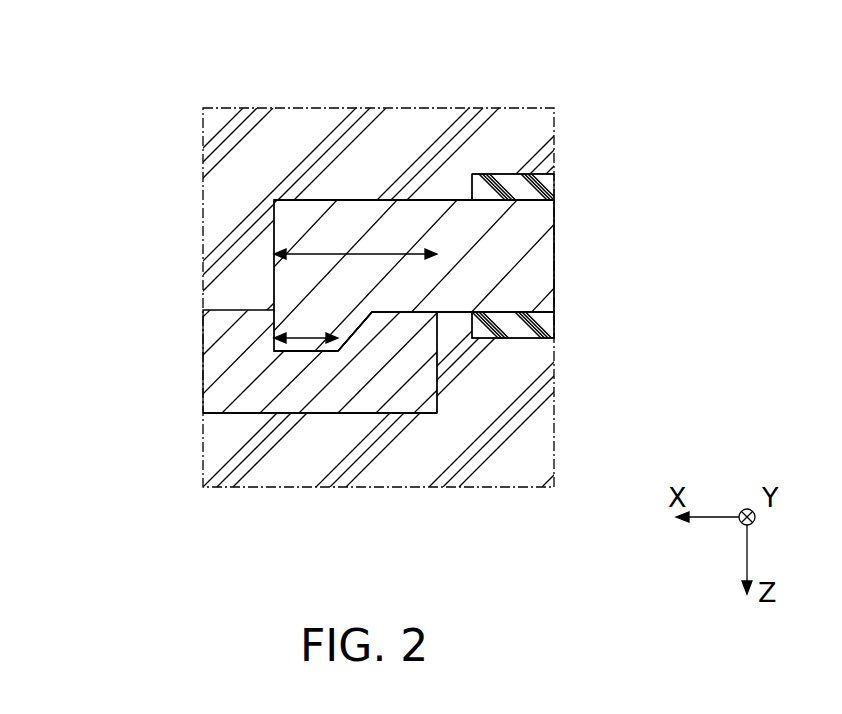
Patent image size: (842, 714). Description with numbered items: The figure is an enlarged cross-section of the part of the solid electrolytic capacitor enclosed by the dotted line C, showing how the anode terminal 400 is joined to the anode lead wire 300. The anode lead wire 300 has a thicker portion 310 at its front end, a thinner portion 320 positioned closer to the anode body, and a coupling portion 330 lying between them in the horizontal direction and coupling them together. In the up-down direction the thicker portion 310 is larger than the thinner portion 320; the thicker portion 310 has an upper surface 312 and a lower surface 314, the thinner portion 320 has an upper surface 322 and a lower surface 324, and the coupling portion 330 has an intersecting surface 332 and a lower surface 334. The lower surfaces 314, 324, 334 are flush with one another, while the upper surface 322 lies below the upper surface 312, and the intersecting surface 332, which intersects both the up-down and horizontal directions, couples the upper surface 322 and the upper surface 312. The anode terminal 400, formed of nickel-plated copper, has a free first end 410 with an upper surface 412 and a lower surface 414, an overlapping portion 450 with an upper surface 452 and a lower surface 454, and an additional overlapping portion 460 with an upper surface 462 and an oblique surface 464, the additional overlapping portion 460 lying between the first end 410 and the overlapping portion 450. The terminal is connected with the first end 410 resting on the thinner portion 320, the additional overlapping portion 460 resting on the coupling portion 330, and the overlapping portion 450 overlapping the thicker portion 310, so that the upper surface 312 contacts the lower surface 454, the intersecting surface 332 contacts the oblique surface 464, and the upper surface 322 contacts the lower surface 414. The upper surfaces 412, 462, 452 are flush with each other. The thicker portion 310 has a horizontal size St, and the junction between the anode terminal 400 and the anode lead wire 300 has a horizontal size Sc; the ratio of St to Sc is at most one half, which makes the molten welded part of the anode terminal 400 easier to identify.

The anode lead wire 300 is at (554, 252).
The thicker portion 310 is at (213, 239).
The upper surface of thicker portion 312 is at (304, 352).
The lower surface of thicker portion 314 is at (305, 200).
The thinner portion 320 is at (554, 199).
The upper surface of thinner portion 322 is at (418, 312).
The lower surface of thinner portion 324 is at (413, 200).
The coupling portion 330 is at (512, 238).
The intersecting surface 332 is at (360, 322).
The lower surface of coupling portion 334 is at (353, 200).
The anode terminal 400 is at (207, 362).
The first end 410 is at (437, 353).
The upper surface of first end 412 is at (427, 413).
The lower surface of first end 414 is at (395, 312).
The overlapping portion 450 is at (336, 442).
The upper surface of overlapping portion 452 is at (305, 414).
The lower surface of overlapping portion 454 is at (296, 351).
The additional overlapping portion 460 is at (368, 292).
The upper surface of additional overlapping portion 462 is at (353, 413).
The oblique surface 464 is at (357, 320).
The dotted line C is at (203, 126).
The size of junction Sc is at (356, 253).
The size of thicker portion St is at (305, 338).